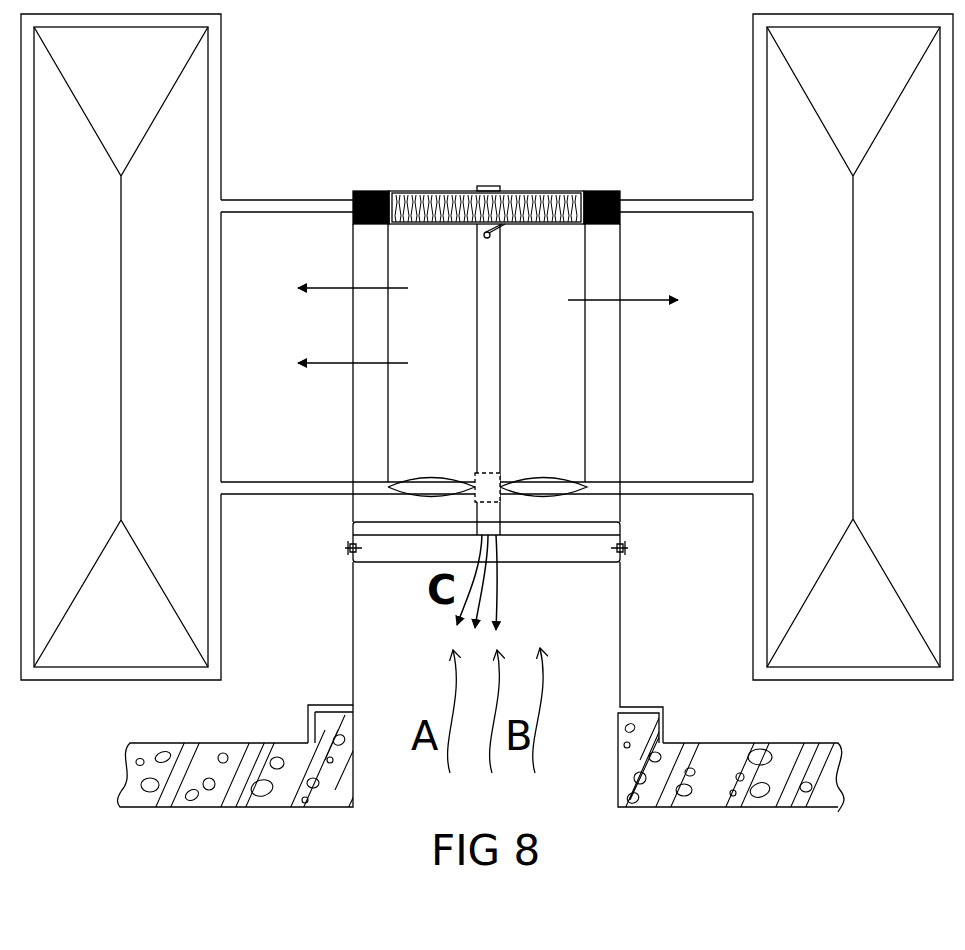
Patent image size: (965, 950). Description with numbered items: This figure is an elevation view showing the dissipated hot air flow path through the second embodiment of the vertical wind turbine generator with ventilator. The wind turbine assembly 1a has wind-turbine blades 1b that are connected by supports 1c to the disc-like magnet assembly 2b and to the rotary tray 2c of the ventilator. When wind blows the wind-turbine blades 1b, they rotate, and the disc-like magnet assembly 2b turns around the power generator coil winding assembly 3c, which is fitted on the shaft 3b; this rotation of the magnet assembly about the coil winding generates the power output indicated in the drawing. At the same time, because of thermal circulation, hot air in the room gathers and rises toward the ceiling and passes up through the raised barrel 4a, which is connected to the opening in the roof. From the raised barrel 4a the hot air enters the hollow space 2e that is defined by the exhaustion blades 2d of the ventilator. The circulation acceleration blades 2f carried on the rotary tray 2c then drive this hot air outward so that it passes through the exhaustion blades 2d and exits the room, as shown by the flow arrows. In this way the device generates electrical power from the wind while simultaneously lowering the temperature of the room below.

The wind turbine assembly 1a is at (485, 188).
The wind-turbine blades 1b is at (183, 132).
The supports 1c is at (253, 487).
The disc-like magnet assembly 2b is at (618, 226).
The rotary tray 2c is at (620, 503).
The exhaustion blades 2d is at (602, 422).
The hollow space 2e is at (412, 417).
The circulation acceleration blades 2f is at (543, 475).
The shaft 3b is at (483, 320).
The power generator coil winding assembly 3c is at (403, 223).
The raised barrel 4a is at (620, 675).